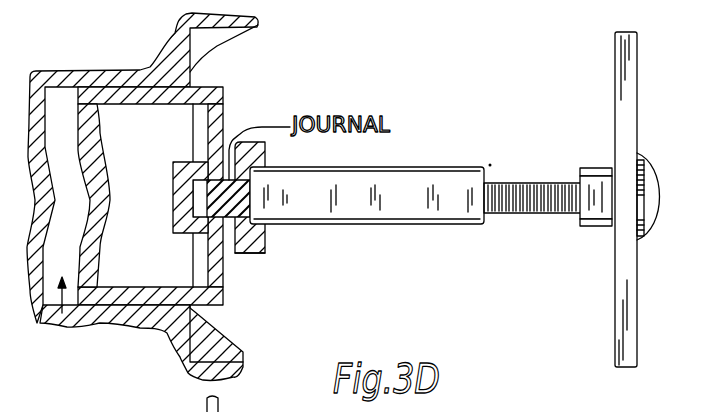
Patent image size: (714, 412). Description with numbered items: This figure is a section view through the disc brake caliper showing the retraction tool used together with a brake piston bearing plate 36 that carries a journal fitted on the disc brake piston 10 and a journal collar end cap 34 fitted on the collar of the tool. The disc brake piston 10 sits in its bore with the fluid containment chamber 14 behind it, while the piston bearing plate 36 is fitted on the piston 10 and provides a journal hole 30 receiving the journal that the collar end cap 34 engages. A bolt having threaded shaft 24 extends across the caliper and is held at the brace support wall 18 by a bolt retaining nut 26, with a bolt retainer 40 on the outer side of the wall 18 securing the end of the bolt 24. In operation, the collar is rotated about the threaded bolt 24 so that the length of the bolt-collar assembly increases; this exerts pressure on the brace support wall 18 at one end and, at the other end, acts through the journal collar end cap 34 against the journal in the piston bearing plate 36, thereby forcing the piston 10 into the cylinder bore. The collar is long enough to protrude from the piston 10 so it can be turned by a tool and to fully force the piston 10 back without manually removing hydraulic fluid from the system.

The disc brake piston 10 is at (122, 307).
The fluid containment chamber 14 is at (58, 328).
The brace support wall 18 is at (616, 48).
The bolt having threaded shaft 24 is at (542, 183).
The bolt retaining nut 26 is at (592, 227).
The journal hole 30 is at (207, 218).
The journal collar end cap 34 is at (253, 252).
The piston bearing plate 36 is at (230, 108).
The bolt retainer 40 is at (655, 183).